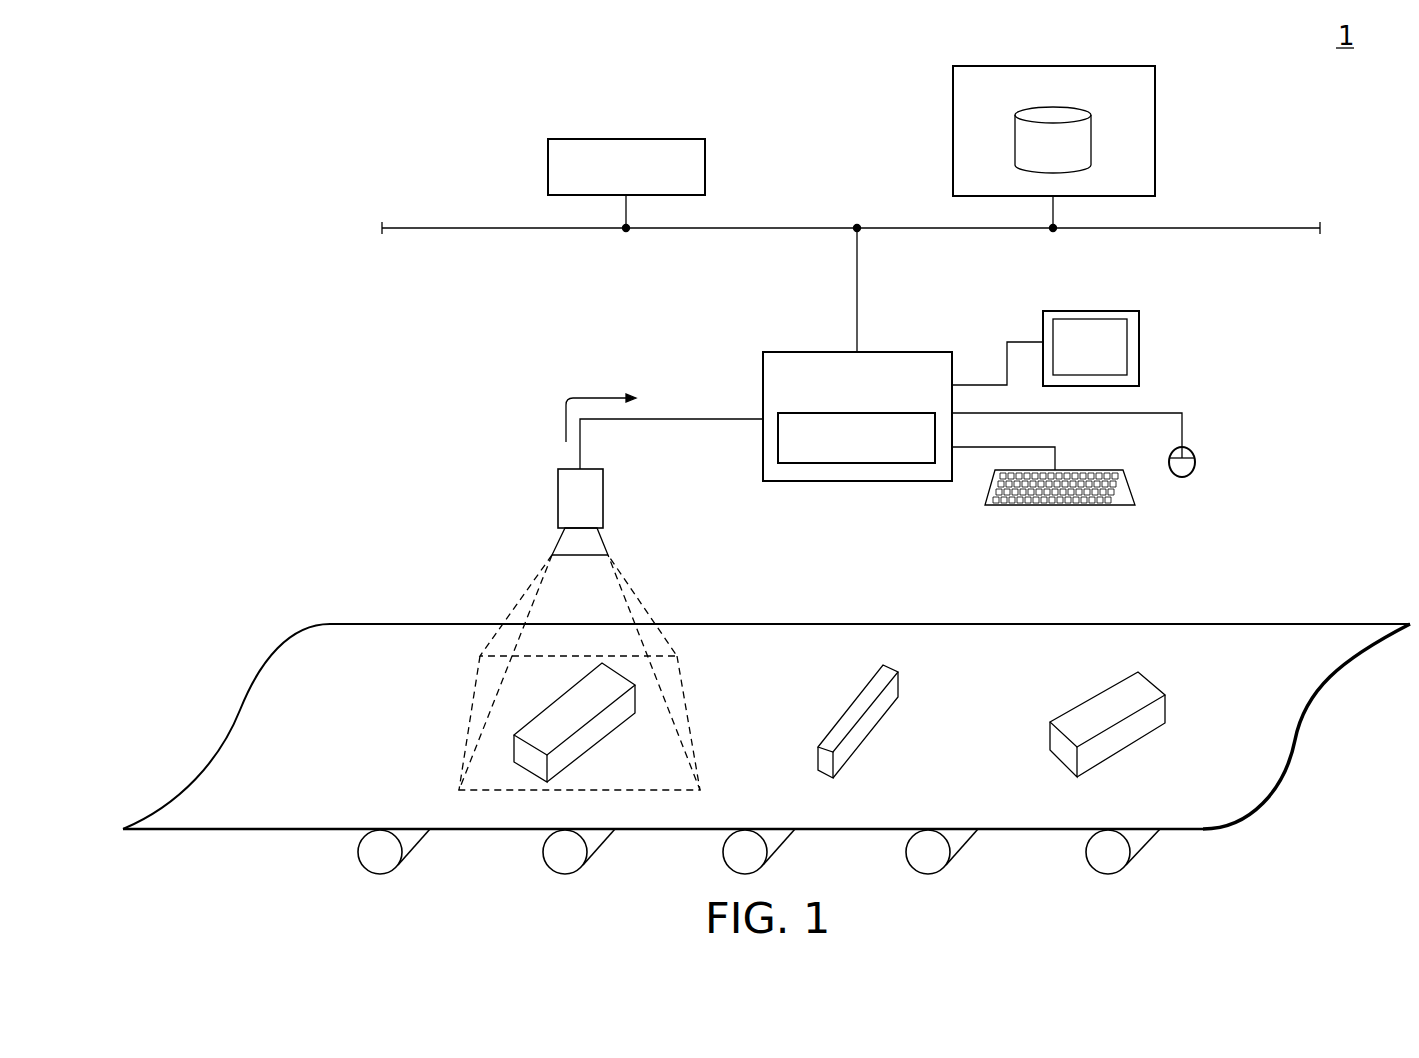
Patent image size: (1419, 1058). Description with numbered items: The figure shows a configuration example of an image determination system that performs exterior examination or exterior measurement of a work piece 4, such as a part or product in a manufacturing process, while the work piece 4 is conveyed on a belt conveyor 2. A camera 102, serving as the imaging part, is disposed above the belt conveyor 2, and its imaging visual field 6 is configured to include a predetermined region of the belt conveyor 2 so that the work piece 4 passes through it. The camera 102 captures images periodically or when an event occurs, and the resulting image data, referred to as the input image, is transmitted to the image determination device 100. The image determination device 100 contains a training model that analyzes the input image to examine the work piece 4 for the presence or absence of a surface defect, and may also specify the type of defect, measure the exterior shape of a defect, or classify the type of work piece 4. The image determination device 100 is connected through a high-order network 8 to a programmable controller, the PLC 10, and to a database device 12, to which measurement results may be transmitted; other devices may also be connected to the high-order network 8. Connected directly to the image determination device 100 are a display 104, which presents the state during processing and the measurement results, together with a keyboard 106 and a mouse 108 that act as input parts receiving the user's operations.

The belt conveyor 2 is at (1213, 645).
The work piece 4 is at (580, 707).
The imaging visual field 6 is at (693, 737).
The high-order network 8 is at (1228, 228).
The programmable controller (PLC) 10 is at (640, 139).
The database device 12 is at (1090, 66).
The image determination device 100 is at (835, 88).
The camera 102 is at (603, 500).
The display 104 is at (1100, 311).
The keyboard 106 is at (1060, 507).
The mouse 108 is at (1195, 460).